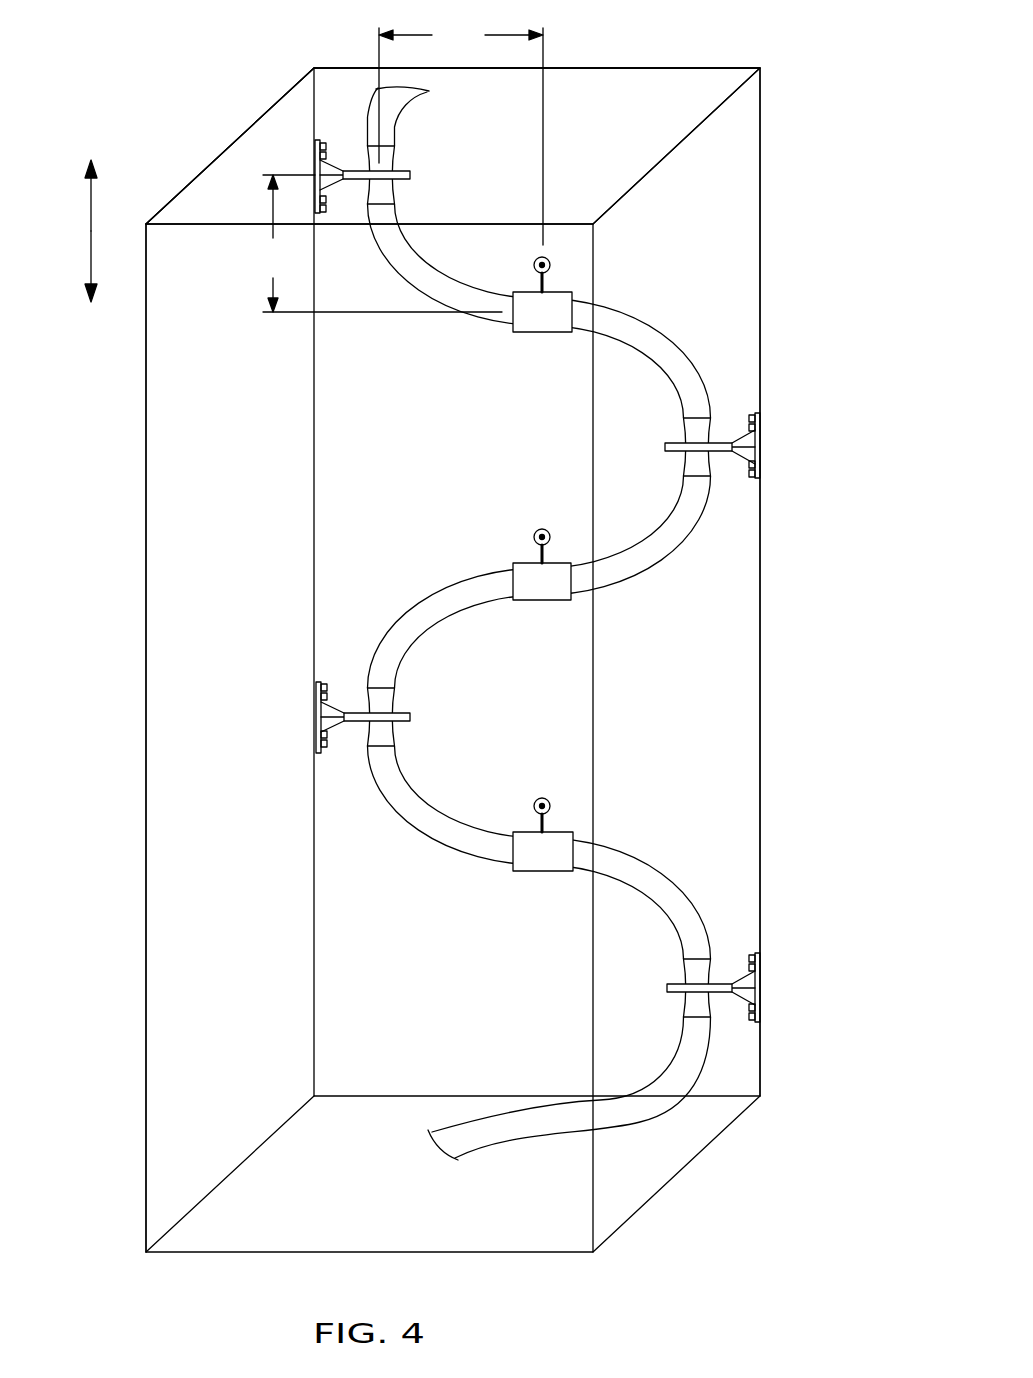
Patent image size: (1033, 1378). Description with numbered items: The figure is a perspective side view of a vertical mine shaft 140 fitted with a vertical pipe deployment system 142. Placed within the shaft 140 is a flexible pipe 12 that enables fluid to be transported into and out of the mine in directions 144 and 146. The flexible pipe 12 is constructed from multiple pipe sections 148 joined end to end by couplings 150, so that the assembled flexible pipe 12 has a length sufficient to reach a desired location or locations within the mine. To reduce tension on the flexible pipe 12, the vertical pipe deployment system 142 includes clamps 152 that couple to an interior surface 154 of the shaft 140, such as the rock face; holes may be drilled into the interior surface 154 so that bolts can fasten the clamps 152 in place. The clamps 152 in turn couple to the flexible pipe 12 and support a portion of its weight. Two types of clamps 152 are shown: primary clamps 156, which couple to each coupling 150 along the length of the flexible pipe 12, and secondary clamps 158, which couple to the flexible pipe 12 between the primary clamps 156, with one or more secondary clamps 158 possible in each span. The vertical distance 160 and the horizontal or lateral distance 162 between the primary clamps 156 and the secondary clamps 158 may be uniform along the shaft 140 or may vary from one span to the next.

The flexible pipe 12 is at (573, 623).
The vertical mine shaft 140 is at (146, 405).
The vertical pipe deployment system 142 is at (846, 82).
The direction 144 is at (91, 195).
The direction 146 is at (91, 263).
The pipe section 148 is at (407, 265).
The coupling 150 is at (387, 162).
The clamp 152 is at (192, 209).
The interior surface 154 is at (150, 470).
The primary clamp 156 is at (320, 168).
The secondary clamp 158 is at (527, 333).
The vertical distance 160 is at (378, 243).
The horizontal/lateral distance 162 is at (461, 132).